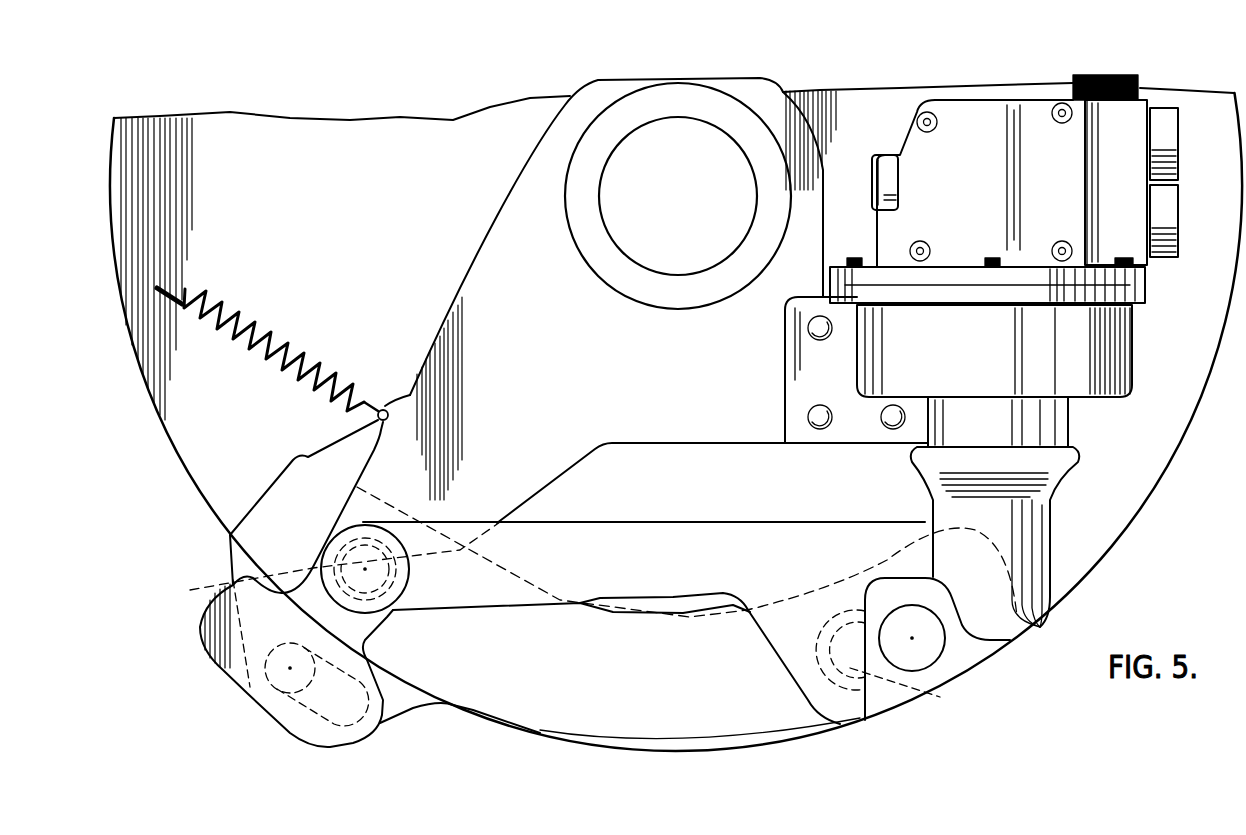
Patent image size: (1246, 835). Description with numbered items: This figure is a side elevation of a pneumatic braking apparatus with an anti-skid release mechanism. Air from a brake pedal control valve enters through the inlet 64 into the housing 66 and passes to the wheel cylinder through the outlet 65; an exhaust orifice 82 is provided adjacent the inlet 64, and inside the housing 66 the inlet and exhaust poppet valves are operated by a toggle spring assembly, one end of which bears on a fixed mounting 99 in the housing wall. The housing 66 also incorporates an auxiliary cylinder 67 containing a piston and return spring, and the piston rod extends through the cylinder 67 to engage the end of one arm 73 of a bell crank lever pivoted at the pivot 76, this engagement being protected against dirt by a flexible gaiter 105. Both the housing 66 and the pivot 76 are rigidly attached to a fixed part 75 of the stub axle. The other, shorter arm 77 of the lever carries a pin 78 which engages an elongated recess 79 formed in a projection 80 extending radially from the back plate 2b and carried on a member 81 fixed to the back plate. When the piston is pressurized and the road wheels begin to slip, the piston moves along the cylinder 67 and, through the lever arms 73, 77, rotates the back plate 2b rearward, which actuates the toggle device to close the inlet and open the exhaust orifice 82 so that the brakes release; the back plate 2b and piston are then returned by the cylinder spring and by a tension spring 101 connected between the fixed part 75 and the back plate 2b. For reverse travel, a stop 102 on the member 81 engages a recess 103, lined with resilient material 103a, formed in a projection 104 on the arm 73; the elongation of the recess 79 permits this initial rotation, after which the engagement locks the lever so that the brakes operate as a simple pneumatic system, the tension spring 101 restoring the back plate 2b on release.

The back plate 2b is at (218, 487).
The inlet 64 is at (1165, 215).
The outlet 65 is at (1128, 88).
The housing 66 is at (848, 368).
The auxiliary cylinder 67 is at (1128, 351).
The arm of bell crank lever 73 is at (688, 528).
The fixed part of the stub axle 75 is at (490, 266).
The pivot 76 is at (235, 583).
The shorter arm of bell crank lever 77 is at (350, 632).
The pin 78 is at (250, 685).
The recess 79 is at (300, 722).
The projection 80 is at (246, 552).
The member 81 is at (505, 710).
The exhaust orifice 82 is at (1160, 135).
The fixed mounting 99 is at (880, 158).
The tension spring 101 is at (262, 325).
The stop 102 is at (928, 648).
The recess 103 is at (927, 687).
The resilient material 103a is at (898, 710).
The projection 104 is at (800, 685).
The flexible gaiter 105 is at (1052, 573).